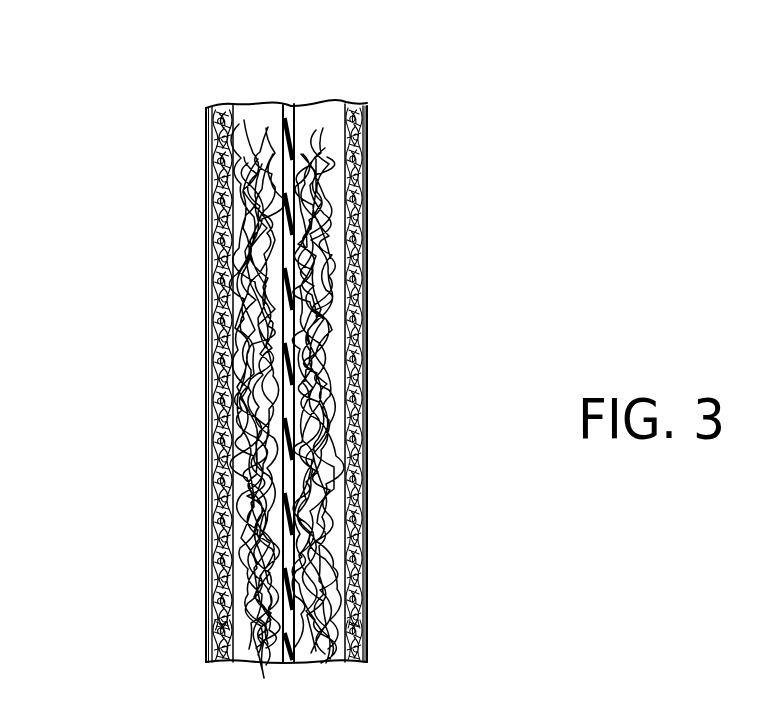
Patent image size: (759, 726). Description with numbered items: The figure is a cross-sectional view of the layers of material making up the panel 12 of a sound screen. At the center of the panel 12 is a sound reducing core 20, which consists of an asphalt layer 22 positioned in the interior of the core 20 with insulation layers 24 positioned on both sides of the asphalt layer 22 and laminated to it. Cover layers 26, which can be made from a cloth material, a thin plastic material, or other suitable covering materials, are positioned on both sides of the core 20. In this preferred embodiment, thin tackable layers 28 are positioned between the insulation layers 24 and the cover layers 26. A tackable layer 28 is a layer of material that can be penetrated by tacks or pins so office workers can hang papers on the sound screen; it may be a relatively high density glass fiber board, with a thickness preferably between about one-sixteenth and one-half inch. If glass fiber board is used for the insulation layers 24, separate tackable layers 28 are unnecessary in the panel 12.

The panel 12 is at (175, 277).
The sound reducing core 20 is at (340, 100).
The asphalt layer 22 is at (300, 272).
The insulation layer 24 is at (258, 208).
The cover layer 26 is at (207, 393).
The tackable layer 28 is at (217, 542).